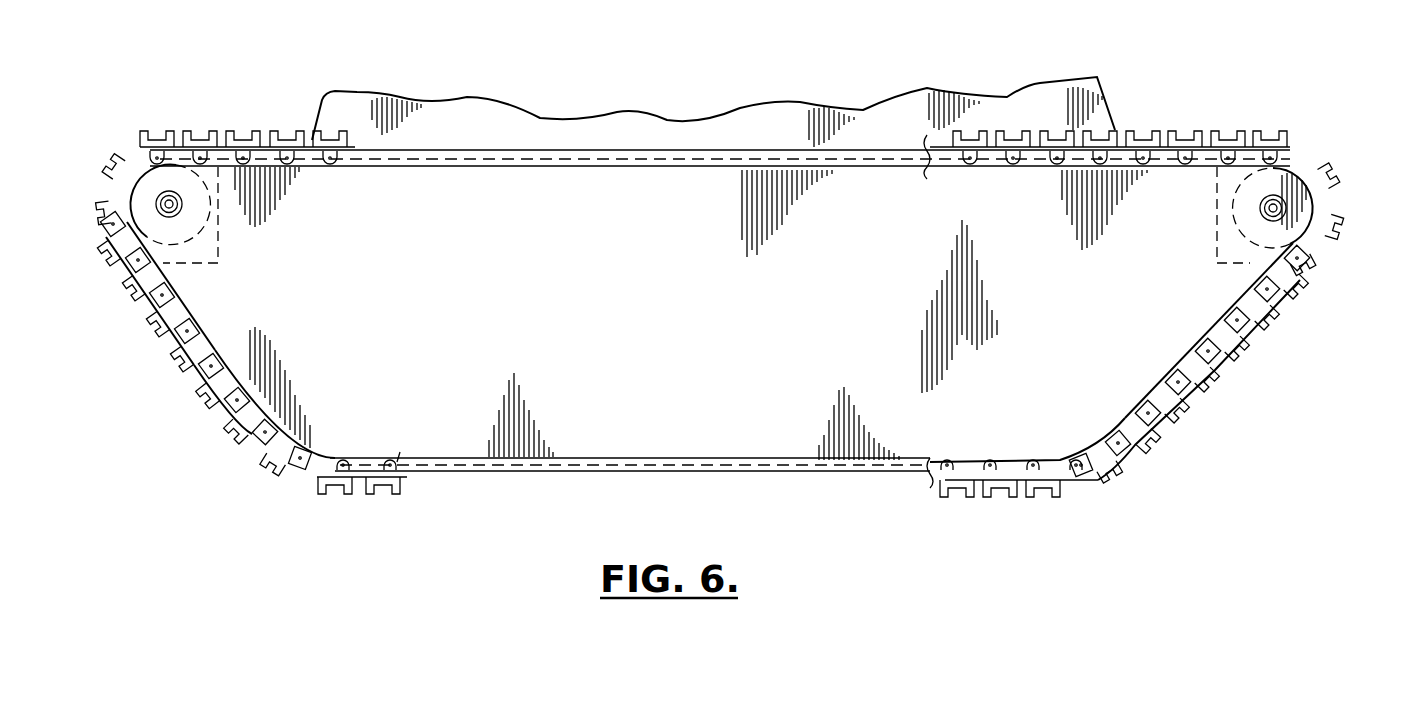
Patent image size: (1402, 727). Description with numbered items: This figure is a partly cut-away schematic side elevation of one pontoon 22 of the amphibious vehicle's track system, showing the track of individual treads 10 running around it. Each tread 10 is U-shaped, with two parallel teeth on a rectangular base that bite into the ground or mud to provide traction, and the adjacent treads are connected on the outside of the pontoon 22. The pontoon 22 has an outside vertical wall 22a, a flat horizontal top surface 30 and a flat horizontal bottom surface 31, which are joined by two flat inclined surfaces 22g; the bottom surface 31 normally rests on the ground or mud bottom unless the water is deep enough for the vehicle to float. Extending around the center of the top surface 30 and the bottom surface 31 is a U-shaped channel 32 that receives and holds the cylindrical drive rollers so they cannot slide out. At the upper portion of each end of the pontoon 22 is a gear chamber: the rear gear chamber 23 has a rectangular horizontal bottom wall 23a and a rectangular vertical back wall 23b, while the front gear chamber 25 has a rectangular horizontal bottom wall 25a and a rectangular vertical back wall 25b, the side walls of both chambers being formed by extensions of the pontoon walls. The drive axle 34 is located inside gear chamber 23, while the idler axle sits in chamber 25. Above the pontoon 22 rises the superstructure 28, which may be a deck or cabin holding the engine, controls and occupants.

The tread 10 is at (105, 163).
The pontoon 22 is at (519, 475).
The outside vertical wall 22a is at (697, 286).
The flat inclined surface 22g is at (224, 372).
The gear chamber 23 is at (231, 241).
The rectangular horizontal bottom wall 23a is at (188, 265).
The rectangular vertical back wall 23b is at (224, 232).
The gear chamber 25 is at (1254, 199).
The rectangular horizontal bottom wall 25a is at (1250, 265).
The rectangular vertical back wall 25b is at (1210, 202).
The superstructure 28 is at (1112, 88).
The flat horizontal top surface 30 is at (596, 168).
The flat horizontal bottom surface 31 is at (665, 458).
The U-shaped channel 32 is at (463, 148).
The drive axle 34 is at (169, 200).